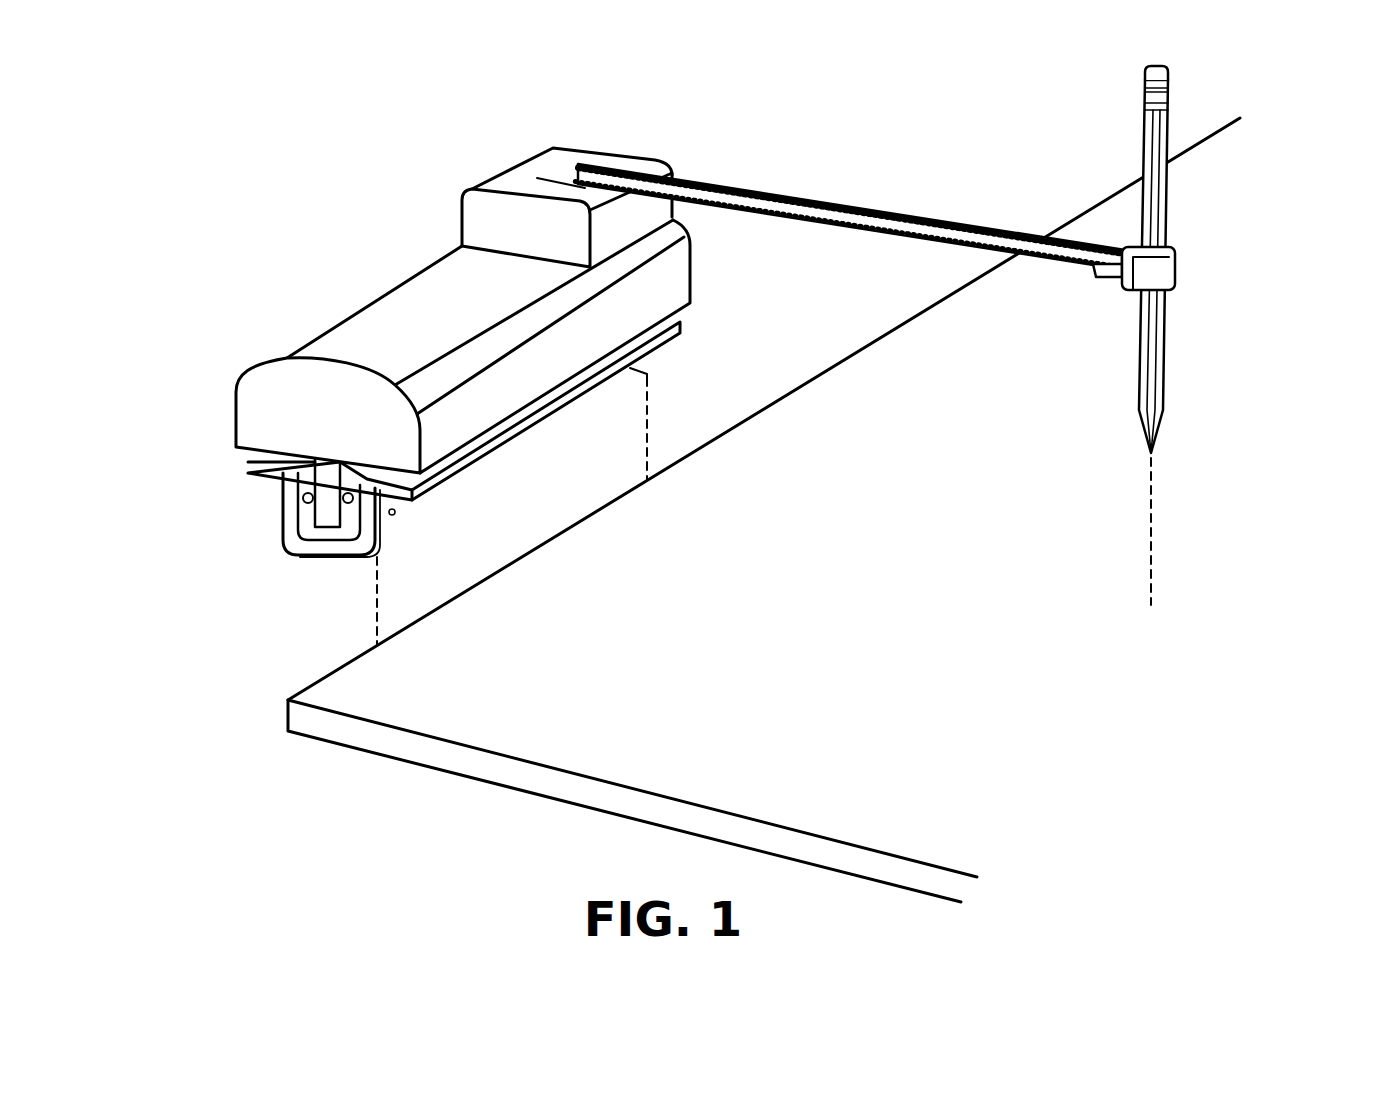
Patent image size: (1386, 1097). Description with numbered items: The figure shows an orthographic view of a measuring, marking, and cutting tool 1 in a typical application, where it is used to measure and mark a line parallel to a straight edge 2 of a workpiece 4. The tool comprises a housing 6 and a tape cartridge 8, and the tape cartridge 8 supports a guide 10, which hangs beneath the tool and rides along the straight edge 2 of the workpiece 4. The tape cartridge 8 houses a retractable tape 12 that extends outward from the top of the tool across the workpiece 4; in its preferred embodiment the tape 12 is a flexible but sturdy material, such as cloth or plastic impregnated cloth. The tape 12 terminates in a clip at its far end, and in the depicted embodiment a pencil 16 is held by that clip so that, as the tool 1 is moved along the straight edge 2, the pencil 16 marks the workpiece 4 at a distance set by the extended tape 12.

The measuring, marking, and cutting tool 1 is at (742, 369).
The straight edge 2 is at (530, 564).
The workpiece 4 is at (622, 723).
The housing 6 is at (390, 333).
The tape cartridge 8 is at (553, 148).
The guide 10 is at (258, 488).
The tape 12 is at (905, 212).
The pencil 16 is at (1127, 363).